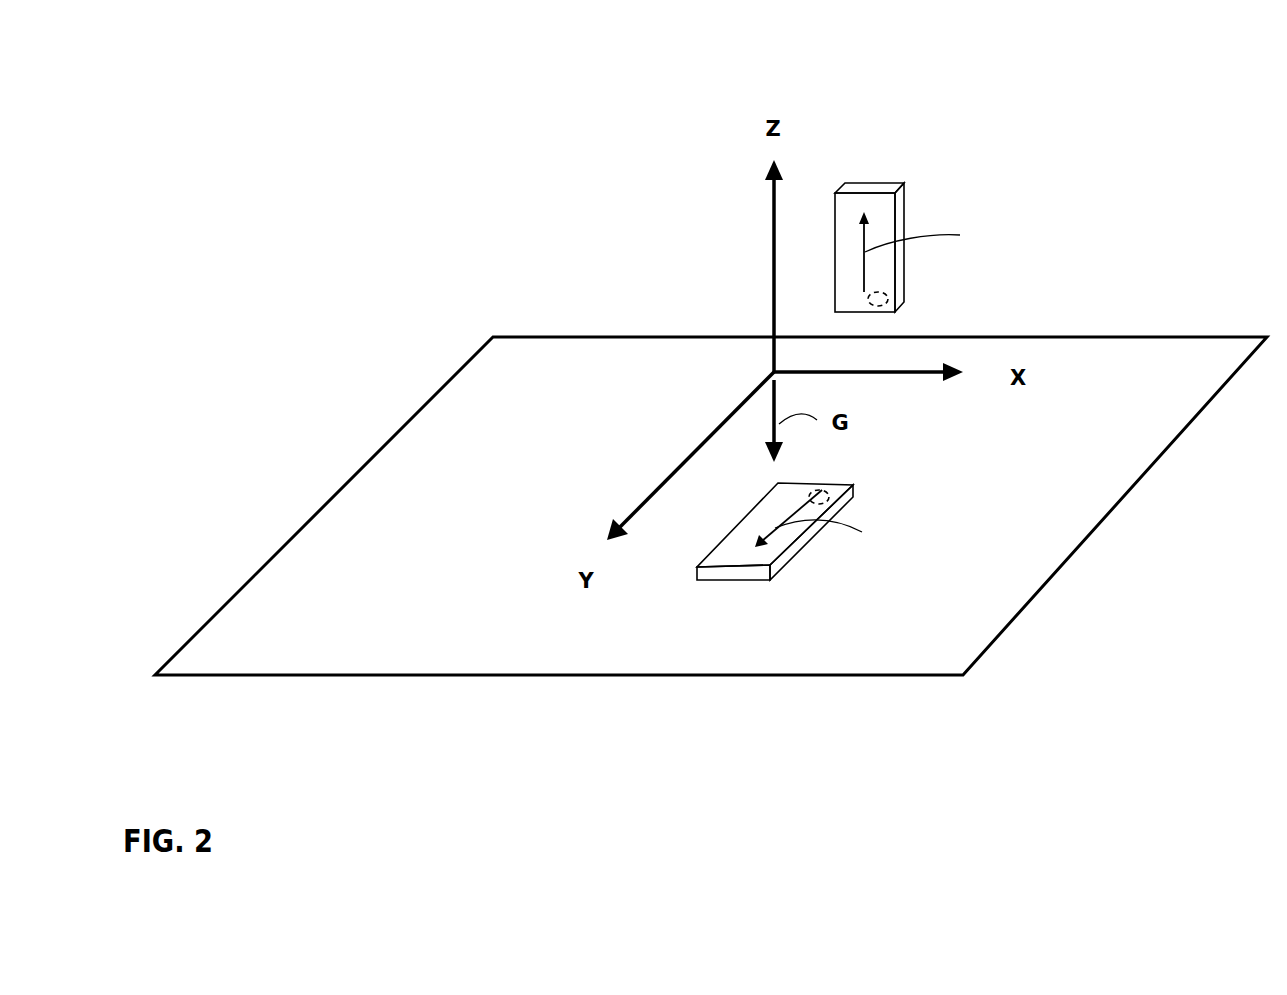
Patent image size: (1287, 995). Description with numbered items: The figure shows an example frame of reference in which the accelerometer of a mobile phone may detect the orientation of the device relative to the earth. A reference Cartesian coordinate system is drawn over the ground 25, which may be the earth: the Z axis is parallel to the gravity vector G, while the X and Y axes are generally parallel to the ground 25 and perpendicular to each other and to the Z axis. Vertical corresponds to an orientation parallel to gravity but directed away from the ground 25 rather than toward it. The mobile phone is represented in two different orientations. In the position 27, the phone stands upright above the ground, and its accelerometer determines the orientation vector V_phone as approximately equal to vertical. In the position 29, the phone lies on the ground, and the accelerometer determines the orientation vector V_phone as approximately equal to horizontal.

The ground 25 is at (467, 425).
The position 27 is at (880, 158).
The position 29 is at (727, 594).